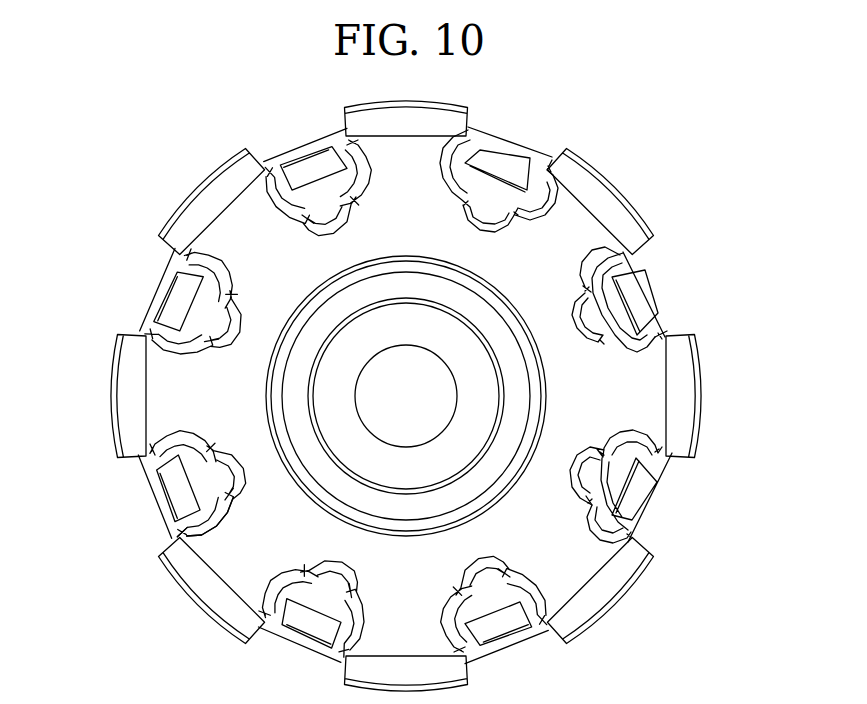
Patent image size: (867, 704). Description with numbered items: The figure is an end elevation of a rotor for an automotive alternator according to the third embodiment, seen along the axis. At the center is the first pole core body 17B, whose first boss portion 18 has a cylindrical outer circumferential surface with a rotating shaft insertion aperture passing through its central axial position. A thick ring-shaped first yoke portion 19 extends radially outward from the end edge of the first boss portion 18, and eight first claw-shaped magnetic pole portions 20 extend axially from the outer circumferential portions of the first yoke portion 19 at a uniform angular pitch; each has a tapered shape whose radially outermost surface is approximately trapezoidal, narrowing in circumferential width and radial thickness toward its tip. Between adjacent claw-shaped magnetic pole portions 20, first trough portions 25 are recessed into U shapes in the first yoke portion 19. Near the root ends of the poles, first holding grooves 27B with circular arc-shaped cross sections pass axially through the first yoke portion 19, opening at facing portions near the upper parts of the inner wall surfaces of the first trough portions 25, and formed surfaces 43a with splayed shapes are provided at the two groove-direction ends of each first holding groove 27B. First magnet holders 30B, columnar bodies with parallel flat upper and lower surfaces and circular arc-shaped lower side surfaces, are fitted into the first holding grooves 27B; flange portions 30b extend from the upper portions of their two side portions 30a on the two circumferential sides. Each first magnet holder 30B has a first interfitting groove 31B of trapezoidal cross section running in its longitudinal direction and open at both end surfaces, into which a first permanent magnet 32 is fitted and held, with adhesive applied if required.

The first pole core body 17B is at (157, 237).
The first boss portion 18 is at (511, 427).
The first yoke portion 19 is at (297, 396).
The first claw-shaped magnetic pole portion 20 is at (94, 396).
The first trough portion 25 is at (162, 488).
The first holding groove 27B is at (255, 603).
The first magnet holder 30B is at (671, 292).
The side portion 30a is at (655, 330).
The flange portion 30b is at (672, 328).
The first interfitting groove 31B is at (655, 462).
The first permanent magnet 32 is at (668, 496).
The formed surface 43a is at (154, 530).